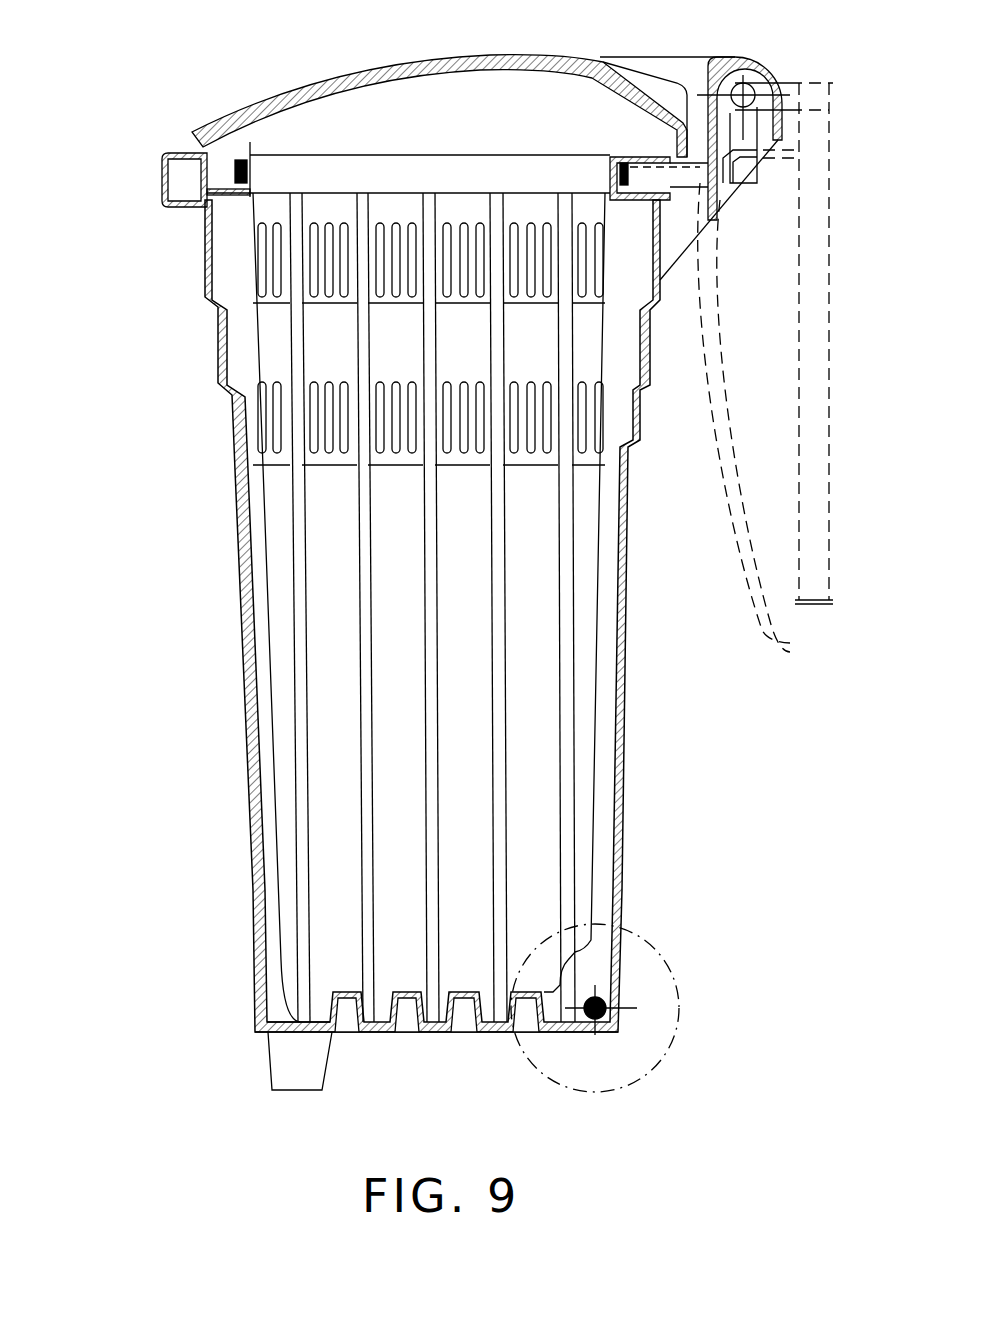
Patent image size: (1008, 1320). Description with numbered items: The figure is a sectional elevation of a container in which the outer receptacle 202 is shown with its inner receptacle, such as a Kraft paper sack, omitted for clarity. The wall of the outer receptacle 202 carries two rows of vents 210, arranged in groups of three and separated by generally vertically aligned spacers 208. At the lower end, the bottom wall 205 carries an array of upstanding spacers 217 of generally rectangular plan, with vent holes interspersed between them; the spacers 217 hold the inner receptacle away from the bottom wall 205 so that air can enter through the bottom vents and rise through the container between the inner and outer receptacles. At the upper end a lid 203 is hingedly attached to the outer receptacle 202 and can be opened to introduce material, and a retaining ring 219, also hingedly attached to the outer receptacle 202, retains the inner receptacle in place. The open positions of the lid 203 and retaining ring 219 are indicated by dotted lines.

The outer receptacle 202 is at (243, 668).
The lid 203 is at (313, 80).
The bottom wall 205 is at (378, 1032).
The spacers 208 is at (297, 548).
The vents 210 is at (263, 262).
The upstanding spacers 217 is at (347, 990).
The retaining ring 219 is at (235, 168).